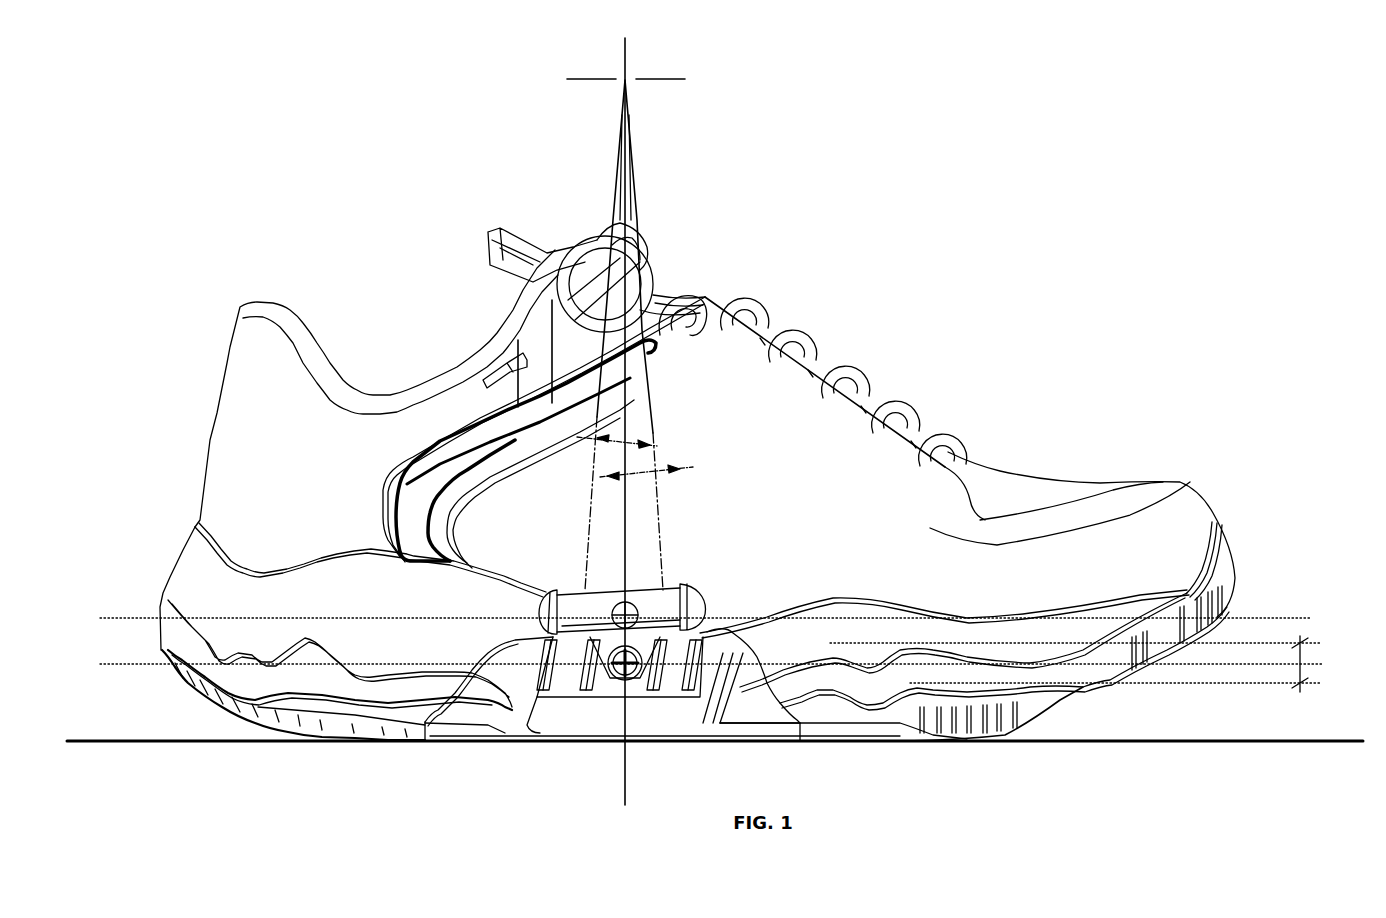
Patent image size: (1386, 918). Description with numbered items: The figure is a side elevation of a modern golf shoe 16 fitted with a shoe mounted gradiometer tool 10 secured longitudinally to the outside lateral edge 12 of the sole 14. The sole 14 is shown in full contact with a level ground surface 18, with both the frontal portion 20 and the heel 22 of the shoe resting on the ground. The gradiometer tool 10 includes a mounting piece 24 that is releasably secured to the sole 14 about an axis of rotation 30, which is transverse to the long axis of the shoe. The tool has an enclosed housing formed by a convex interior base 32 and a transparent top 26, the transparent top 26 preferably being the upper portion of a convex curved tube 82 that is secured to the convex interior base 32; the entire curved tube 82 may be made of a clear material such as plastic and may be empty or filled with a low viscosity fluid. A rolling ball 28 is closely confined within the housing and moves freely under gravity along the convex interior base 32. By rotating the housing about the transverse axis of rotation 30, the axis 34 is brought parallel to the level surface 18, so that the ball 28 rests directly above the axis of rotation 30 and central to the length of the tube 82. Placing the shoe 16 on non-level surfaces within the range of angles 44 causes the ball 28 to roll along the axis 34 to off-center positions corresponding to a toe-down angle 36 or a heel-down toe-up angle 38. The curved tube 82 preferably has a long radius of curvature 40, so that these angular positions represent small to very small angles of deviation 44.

The shoe mounted gradiometer tool 10 is at (715, 585).
The outside lateral edge 12 is at (933, 657).
The sole 14 is at (1107, 677).
The golf shoe 16 is at (1100, 483).
The level ground surface 18 is at (1303, 742).
The frontal portion 20 is at (757, 740).
The heel 22 is at (427, 742).
The mounting piece 24 is at (712, 665).
The transparent top 26 is at (567, 585).
The rolling ball 28 is at (587, 585).
The axis of rotation 30 is at (610, 677).
The convex interior base 32 is at (537, 580).
The axis 34 is at (1310, 618).
The toe-down angle 36 is at (653, 585).
The heel-down toe-up angle 38 is at (607, 585).
The long radius of curvature 40 is at (628, 84).
The range of angles 44 is at (1320, 664).
The curved tube 82 is at (717, 580).